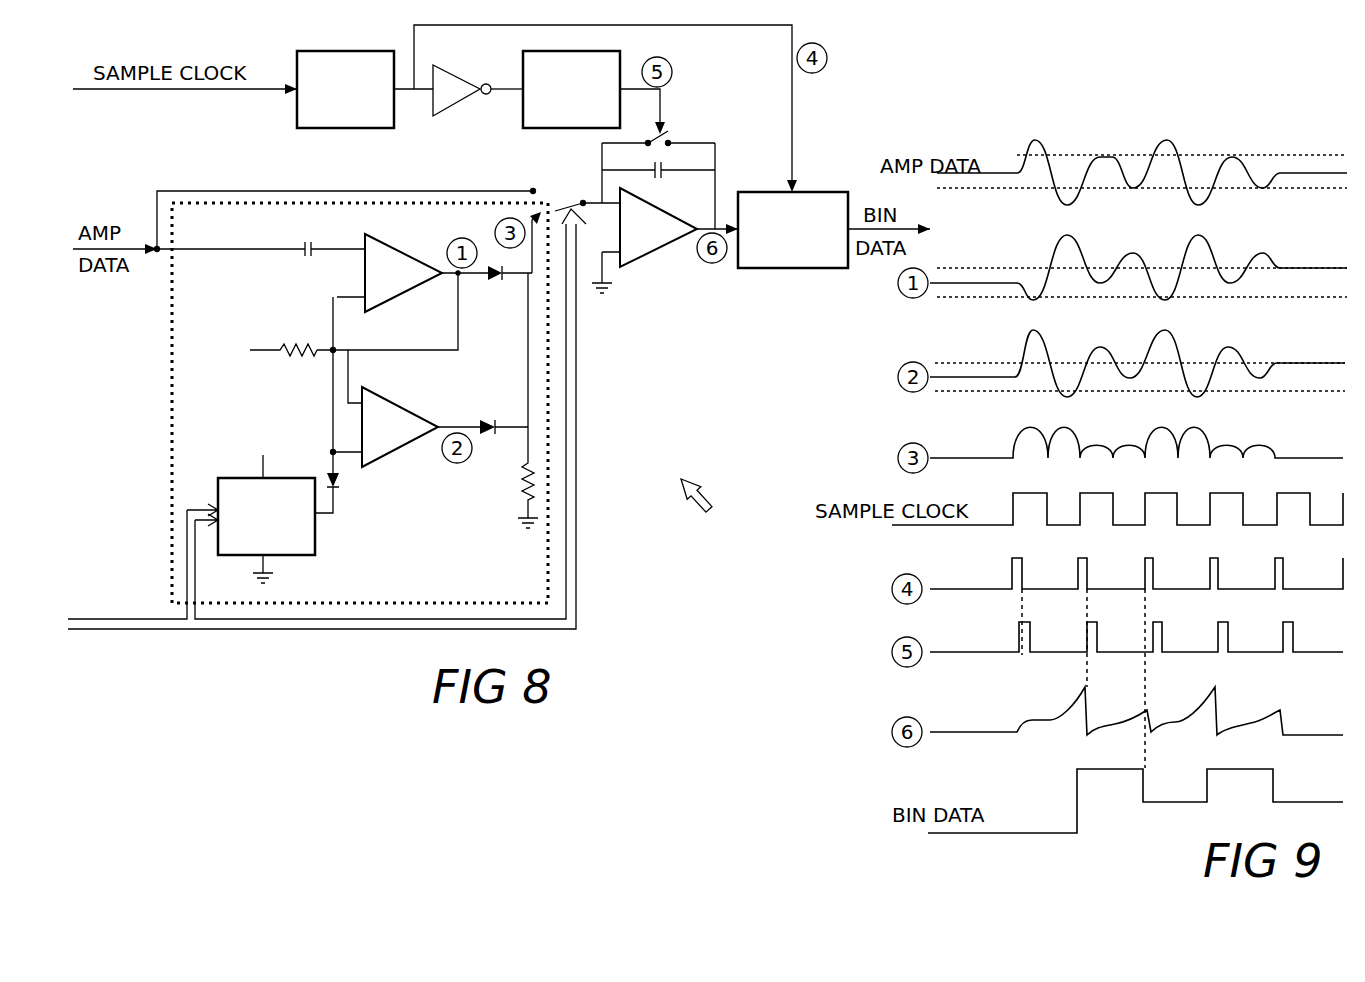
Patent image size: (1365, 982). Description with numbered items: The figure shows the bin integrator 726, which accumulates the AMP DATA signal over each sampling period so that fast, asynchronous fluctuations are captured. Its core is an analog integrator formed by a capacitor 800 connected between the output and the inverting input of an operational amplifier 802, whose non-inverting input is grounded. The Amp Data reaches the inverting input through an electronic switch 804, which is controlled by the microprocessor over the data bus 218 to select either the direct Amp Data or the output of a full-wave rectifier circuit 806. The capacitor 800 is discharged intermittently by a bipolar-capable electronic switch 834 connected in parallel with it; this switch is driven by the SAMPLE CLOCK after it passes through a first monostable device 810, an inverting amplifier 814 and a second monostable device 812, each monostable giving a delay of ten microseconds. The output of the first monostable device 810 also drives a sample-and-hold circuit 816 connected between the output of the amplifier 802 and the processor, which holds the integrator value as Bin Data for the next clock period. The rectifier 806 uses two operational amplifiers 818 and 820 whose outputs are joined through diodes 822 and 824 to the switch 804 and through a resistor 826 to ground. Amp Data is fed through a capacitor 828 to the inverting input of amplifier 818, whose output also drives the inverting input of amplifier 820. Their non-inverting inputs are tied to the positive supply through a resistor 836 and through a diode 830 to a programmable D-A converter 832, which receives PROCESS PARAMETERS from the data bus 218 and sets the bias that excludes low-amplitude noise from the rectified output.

The monostable device 810 is at (303, 130).
The inverting amplifier 814 is at (447, 112).
The monostable device 812 is at (548, 129).
The electronic switch 834 is at (672, 140).
The capacitor 800 is at (663, 166).
The electronic switch 804 is at (556, 205).
The operational amplifier 802 is at (625, 265).
The sample-and-hold circuit 816 is at (765, 268).
The capacitor 828 is at (304, 257).
The full-wave rectifier circuit 806 is at (330, 403).
The operational amplifier 818 is at (369, 312).
The diode 822 is at (490, 281).
The resistor 836 is at (283, 356).
The operational amplifier 820 is at (372, 388).
The diode 824 is at (499, 420).
The diode 830 is at (340, 485).
The resistor 826 is at (519, 495).
The programmable D-A converter 832 is at (298, 555).
The data bus 218 is at (576, 629).
The bin integrator 726 is at (715, 511).